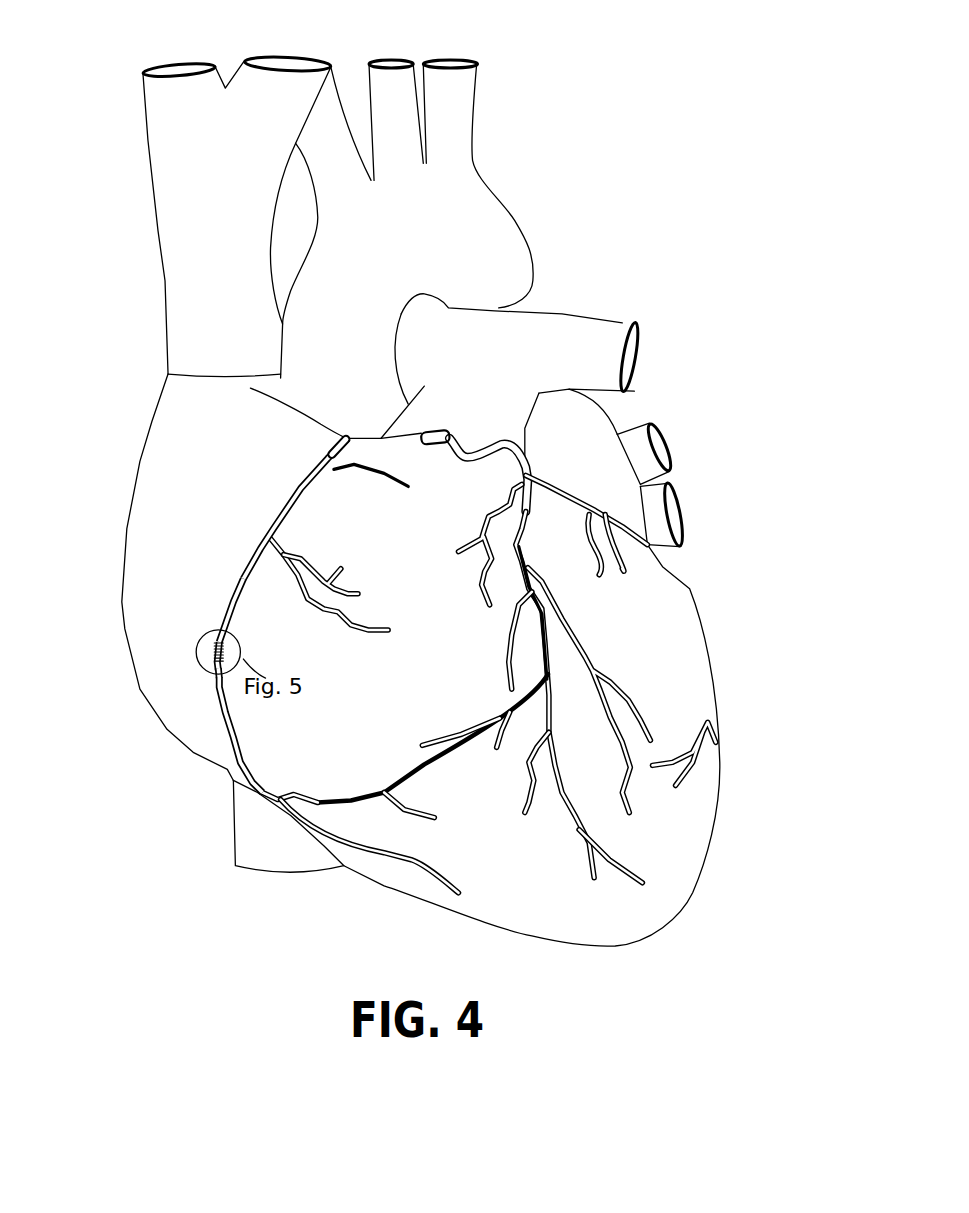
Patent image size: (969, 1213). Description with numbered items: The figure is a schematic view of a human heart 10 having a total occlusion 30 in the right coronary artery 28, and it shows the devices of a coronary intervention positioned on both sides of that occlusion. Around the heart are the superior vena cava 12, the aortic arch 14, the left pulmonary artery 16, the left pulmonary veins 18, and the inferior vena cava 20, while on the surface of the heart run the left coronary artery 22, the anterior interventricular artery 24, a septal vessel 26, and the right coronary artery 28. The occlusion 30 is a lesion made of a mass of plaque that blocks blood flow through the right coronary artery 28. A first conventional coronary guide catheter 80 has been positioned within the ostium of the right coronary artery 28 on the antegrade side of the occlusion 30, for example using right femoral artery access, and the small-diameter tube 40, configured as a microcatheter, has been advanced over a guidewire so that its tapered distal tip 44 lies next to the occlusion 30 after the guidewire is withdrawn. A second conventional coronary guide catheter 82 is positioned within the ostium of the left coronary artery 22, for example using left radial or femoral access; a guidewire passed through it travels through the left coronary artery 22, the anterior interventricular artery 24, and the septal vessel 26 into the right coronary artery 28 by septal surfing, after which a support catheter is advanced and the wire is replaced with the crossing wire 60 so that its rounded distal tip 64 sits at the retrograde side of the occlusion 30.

The human heart 10 is at (793, 423).
The superior vena cava 12 is at (162, 162).
The aortic arch 14 is at (492, 212).
The left pulmonary artery 16 is at (555, 325).
The left pulmonary veins 18 is at (667, 443).
The inferior vena cava 20 is at (240, 842).
The left coronary artery 22 is at (465, 448).
The anterior interventricular artery 24 is at (545, 518).
The septal vessel 26 is at (433, 767).
The right coronary artery 28 is at (272, 513).
The total occlusion 30 is at (193, 632).
The small-diameter tube 40 is at (230, 595).
The tapered distal tip 44 is at (240, 631).
The crossing wire 60 is at (240, 725).
The rounded distal tip 64 is at (200, 683).
The first conventional coronary guide catheter 80 is at (333, 440).
The second conventional coronary guide catheter 82 is at (435, 443).